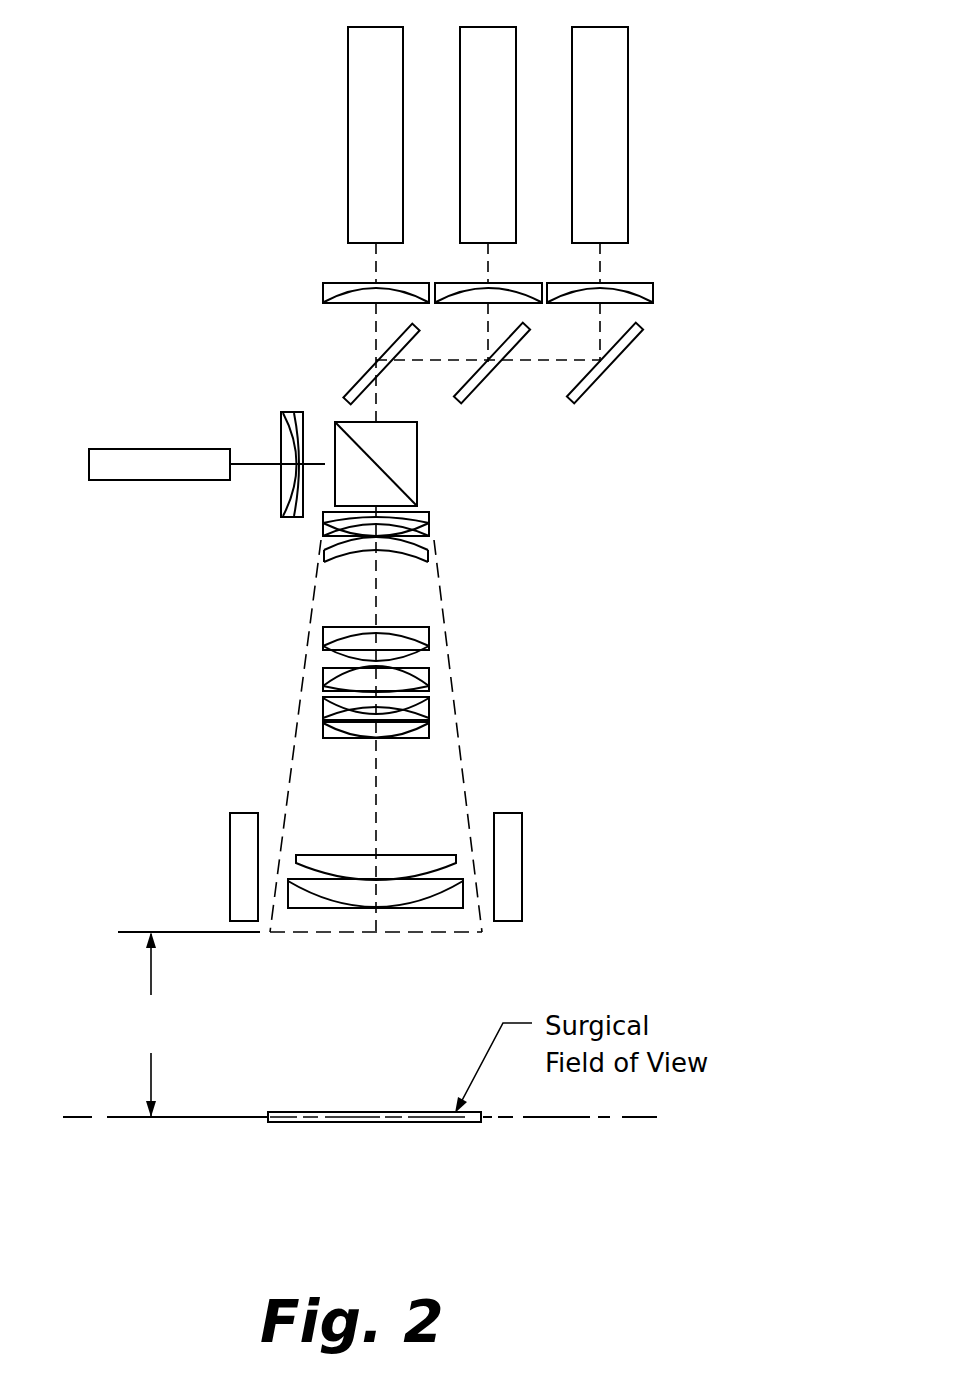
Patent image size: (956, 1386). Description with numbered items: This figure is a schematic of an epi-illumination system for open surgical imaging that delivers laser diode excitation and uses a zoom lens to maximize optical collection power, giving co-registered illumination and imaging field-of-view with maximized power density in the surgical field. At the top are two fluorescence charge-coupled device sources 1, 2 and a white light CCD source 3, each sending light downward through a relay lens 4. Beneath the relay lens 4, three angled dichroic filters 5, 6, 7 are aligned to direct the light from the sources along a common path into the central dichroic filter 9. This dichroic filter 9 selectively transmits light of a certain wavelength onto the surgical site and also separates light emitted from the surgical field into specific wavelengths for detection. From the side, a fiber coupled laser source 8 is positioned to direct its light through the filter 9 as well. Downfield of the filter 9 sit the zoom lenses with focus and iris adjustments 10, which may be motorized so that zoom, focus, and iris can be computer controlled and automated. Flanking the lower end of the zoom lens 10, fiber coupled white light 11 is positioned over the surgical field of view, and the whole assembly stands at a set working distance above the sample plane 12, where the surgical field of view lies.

The fluorescence charge-coupled device source 1 is at (382, 144).
The fluorescence charge-coupled device source 2 is at (493, 144).
The white light CCD source 3 is at (605, 144).
The relay lens 4 is at (306, 292).
The dichroic filter 5 is at (347, 389).
The dichroic filter 6 is at (470, 398).
The dichroic filter 7 is at (582, 399).
The fiber coupled laser source 8 is at (89, 470).
The dichroic filter 9 is at (417, 473).
The zoom lenses with focus and iris adjustments 10 is at (280, 685).
The fiber coupled white light 11 is at (230, 840).
The sample plane 12 is at (174, 1024).